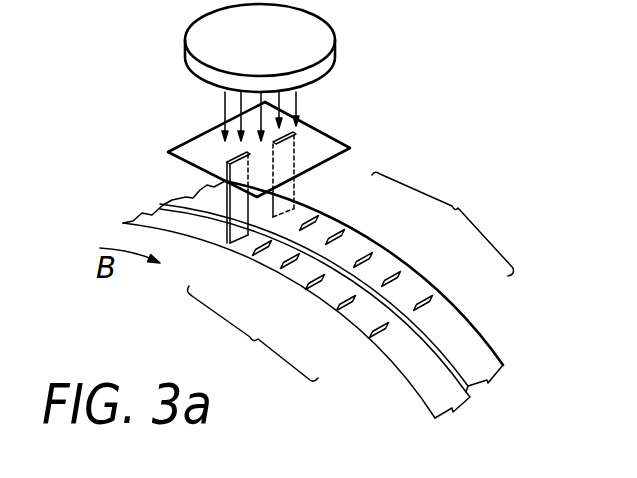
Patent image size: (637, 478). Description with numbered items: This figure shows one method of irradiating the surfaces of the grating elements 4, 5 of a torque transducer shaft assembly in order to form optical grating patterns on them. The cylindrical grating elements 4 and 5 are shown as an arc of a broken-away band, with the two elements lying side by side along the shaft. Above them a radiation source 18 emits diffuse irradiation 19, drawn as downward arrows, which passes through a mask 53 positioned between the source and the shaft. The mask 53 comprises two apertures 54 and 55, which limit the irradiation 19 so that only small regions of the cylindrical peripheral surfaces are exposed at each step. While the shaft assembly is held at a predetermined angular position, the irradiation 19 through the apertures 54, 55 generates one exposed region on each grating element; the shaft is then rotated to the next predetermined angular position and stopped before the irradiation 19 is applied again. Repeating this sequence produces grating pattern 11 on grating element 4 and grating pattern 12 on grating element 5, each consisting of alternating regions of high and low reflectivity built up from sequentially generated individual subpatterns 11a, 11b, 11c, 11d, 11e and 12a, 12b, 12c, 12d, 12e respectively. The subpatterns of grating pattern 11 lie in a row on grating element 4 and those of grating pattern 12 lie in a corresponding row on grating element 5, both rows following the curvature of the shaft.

The radiation source 18 is at (213, 23).
The irradiation 19 is at (297, 107).
The mask 53 is at (168, 153).
The aperture 54 is at (284, 141).
The aperture 55 is at (226, 156).
The grating pattern 12 is at (442, 224).
The subpattern 12a is at (434, 292).
The subpattern 12b is at (400, 277).
The subpattern 12c is at (368, 256).
The subpattern 12d is at (336, 231).
The subpattern 12e is at (305, 218).
The grating pattern 11 is at (253, 333).
The subpattern 11a is at (372, 335).
The subpattern 11b is at (339, 309).
The subpattern 11c is at (308, 288).
The subpattern 11d is at (282, 267).
The subpattern 11e is at (254, 253).
The grating element 5 is at (480, 354).
The grating element 4 is at (420, 380).